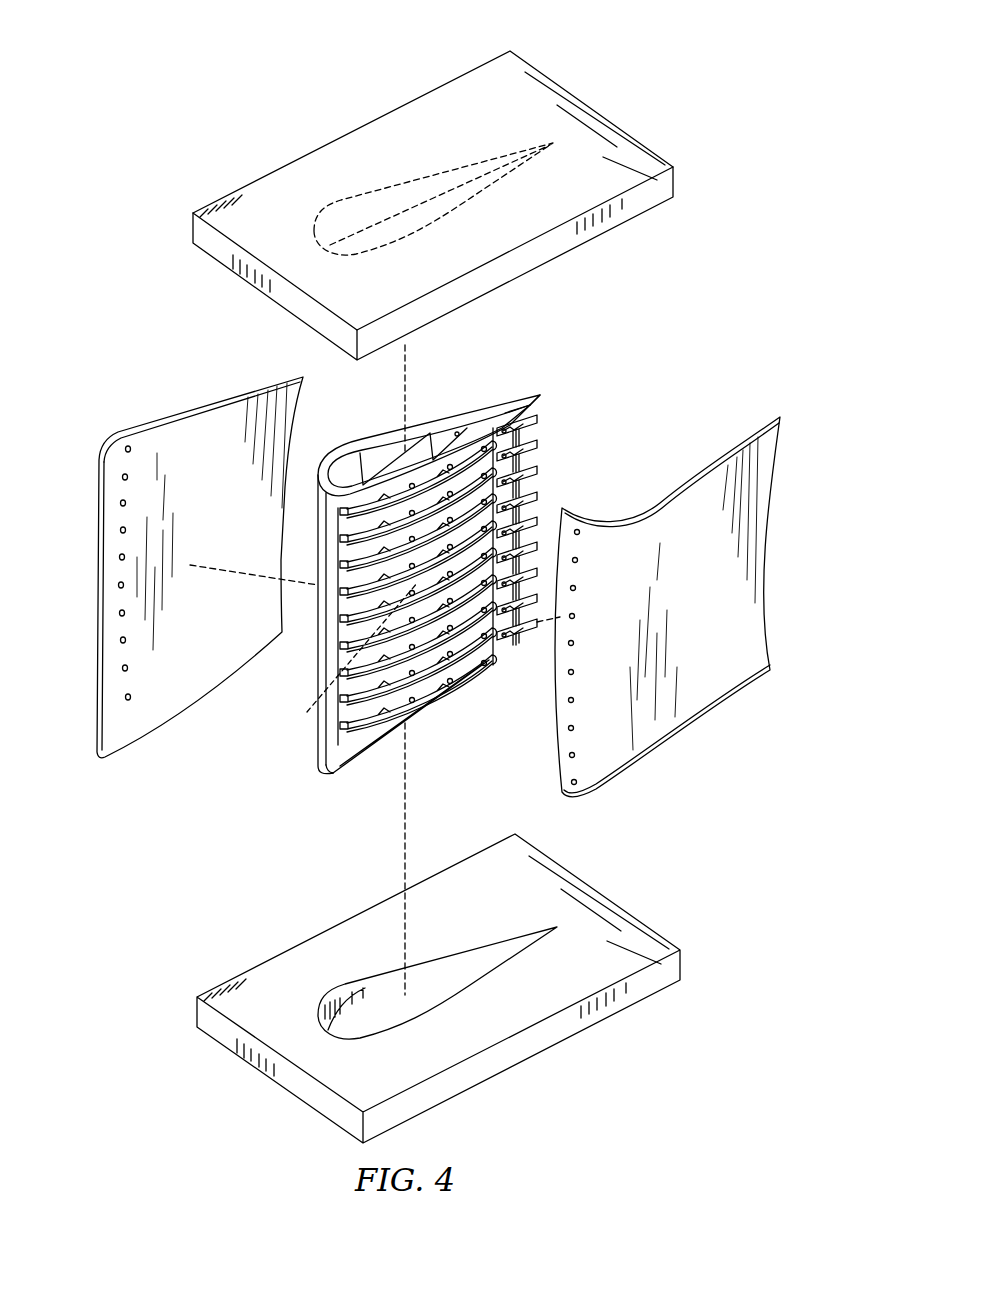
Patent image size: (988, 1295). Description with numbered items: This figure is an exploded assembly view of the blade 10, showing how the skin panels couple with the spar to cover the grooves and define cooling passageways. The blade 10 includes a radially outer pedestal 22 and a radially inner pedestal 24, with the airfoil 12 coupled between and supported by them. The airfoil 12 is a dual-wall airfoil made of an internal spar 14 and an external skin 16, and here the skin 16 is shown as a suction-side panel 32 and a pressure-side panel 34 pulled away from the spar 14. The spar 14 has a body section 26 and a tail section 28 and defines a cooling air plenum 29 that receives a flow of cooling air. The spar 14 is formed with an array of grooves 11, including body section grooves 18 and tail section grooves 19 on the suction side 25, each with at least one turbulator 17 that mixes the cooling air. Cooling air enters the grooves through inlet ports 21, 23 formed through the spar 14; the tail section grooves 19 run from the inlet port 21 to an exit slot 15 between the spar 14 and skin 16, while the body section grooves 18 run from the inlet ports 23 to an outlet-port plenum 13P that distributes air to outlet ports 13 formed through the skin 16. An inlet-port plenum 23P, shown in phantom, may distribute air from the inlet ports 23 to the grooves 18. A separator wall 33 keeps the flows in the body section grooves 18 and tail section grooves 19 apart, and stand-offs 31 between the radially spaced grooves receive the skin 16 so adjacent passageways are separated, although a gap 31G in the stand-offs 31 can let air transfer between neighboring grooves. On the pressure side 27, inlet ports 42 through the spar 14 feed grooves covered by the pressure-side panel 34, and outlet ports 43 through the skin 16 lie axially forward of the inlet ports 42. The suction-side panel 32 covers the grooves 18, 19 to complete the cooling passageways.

The blade 10 is at (107, 101).
The array of grooves 11 is at (423, 733).
The airfoil 12 is at (240, 321).
The outlet ports 13 is at (579, 516).
The outlet-port plenum 13P is at (336, 497).
The spar 14 is at (288, 679).
The exit slot 15 is at (533, 453).
The skin 16 is at (742, 520).
The turbulator 17 is at (390, 687).
The body section grooves 18 is at (452, 695).
The tail section grooves 19 is at (500, 652).
The inlet port 21 is at (520, 417).
The radially outer pedestal 22 is at (268, 196).
The inlet ports 23 is at (483, 432).
The inlet-port plenum 23P is at (499, 645).
The radially inner pedestal 24 is at (218, 1046).
The suction side 25 is at (782, 604).
The body section 26 is at (341, 444).
The pressure side 27 is at (84, 473).
The tail section 28 is at (526, 392).
The cooling air plenum 29 is at (390, 444).
The stand-offs 31 is at (340, 740).
The gap 31G is at (307, 712).
The suction-side panel 32 is at (662, 474).
The separator wall 33 is at (503, 423).
The pressure-side panel 34 is at (166, 403).
The inlet ports 42 is at (453, 426).
The outlet ports 43 is at (118, 438).